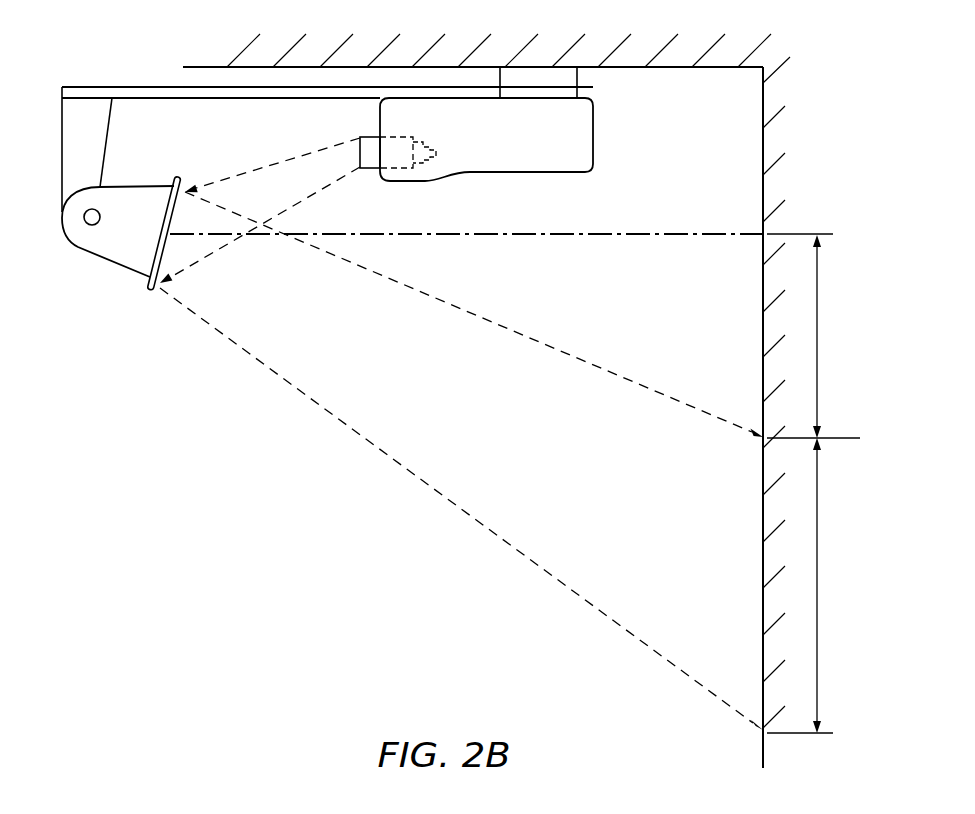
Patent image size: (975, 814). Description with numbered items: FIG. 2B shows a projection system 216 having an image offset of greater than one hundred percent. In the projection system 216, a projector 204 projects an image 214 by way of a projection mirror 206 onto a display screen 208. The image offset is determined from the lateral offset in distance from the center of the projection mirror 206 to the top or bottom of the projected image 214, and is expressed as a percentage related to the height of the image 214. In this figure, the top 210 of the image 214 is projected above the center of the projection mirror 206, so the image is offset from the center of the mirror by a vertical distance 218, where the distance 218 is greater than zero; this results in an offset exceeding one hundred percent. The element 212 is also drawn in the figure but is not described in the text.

The projection system 216 is at (78, 56).
The top of the projected image 210 is at (183, 67).
The spacer block 212 is at (578, 78).
The projector 204 is at (593, 150).
The projection mirror 206 is at (155, 292).
The display screen 208 is at (763, 560).
The vertical offset distance 218 is at (817, 305).
The projected image 214 is at (817, 588).